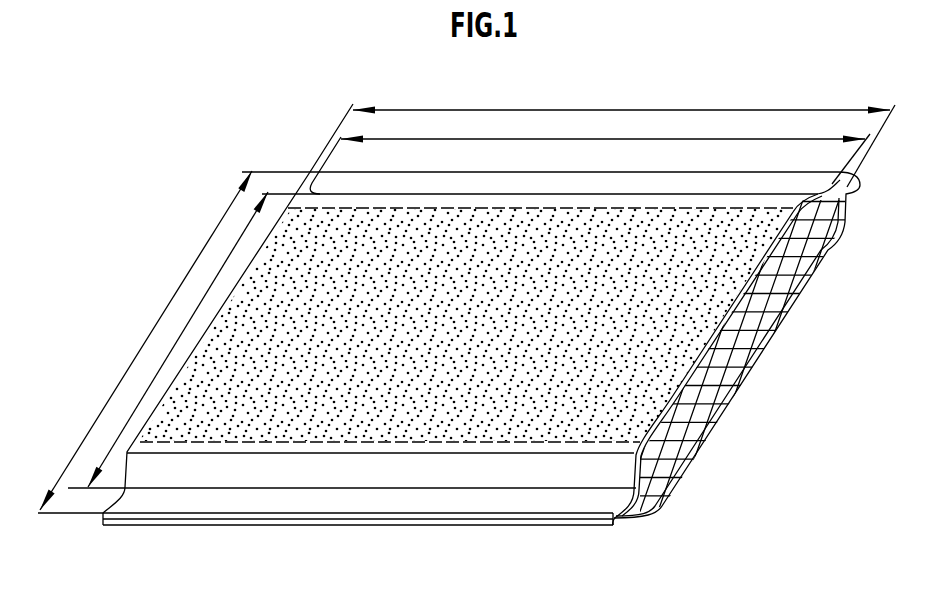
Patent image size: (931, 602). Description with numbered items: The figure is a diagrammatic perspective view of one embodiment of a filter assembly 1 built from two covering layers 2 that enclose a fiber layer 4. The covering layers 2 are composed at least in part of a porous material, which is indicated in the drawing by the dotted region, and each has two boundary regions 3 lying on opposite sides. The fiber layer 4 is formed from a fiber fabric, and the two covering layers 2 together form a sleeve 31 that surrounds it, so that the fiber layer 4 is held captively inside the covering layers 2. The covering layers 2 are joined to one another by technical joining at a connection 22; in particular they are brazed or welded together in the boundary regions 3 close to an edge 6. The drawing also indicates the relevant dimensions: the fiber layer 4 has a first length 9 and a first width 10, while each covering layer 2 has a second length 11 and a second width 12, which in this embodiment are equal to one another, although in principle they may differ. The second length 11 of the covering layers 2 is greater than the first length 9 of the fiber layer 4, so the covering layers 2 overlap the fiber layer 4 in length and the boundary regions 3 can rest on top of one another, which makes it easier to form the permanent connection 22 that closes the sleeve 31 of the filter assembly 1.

The filter assembly 1 is at (288, 149).
The covering layer 2 is at (816, 272).
The boundary region 3 is at (853, 193).
The fiber layer 4 is at (748, 328).
The edge 6 is at (242, 525).
The first length 9 is at (195, 306).
The first width 10 is at (584, 139).
The second length 11 is at (152, 328).
The second width 12 is at (645, 110).
The connection 22 is at (625, 516).
The sleeve 31 is at (736, 428).